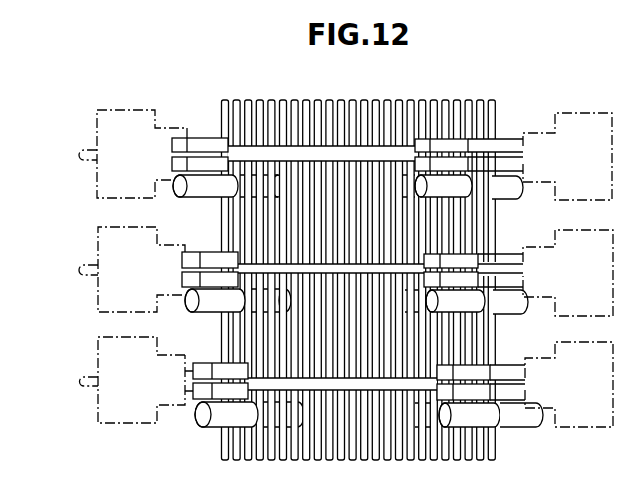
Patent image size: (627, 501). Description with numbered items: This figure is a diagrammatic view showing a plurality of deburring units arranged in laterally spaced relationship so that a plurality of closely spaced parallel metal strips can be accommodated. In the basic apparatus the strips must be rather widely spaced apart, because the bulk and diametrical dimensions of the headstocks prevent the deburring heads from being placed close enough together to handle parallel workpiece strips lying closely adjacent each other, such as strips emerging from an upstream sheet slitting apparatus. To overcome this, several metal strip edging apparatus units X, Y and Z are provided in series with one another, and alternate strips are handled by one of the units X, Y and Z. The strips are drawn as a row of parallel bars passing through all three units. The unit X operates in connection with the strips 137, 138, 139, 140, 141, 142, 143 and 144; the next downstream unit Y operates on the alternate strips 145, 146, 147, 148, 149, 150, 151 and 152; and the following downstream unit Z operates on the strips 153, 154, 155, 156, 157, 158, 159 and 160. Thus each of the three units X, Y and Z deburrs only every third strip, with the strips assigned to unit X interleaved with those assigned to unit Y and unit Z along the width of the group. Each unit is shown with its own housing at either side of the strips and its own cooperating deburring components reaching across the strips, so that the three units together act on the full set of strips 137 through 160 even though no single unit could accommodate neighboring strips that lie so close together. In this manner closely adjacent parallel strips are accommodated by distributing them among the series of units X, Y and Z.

The strip 137 is at (237, 461).
The strip 138 is at (283, 461).
The strip 139 is at (318, 461).
The strip 140 is at (353, 461).
The strip 141 is at (387, 461).
The strip 142 is at (422, 461).
The strip 143 is at (457, 461).
The strip 144 is at (492, 461).
The strip 145 is at (224, 462).
The strip 146 is at (271, 462).
The strip 147 is at (306, 462).
The strip 148 is at (341, 462).
The strip 149 is at (376, 462).
The strip 150 is at (410, 462).
The strip 151 is at (445, 462).
The strip 152 is at (480, 462).
The strip 153 is at (216, 286).
The strip 154 is at (260, 101).
The strip 155 is at (295, 101).
The strip 156 is at (329, 101).
The strip 157 is at (364, 101).
The strip 158 is at (399, 101).
The strip 159 is at (434, 101).
The strip 160 is at (469, 101).
The metal strip edging apparatus unit X is at (203, 427).
The metal strip edging apparatus unit Y is at (203, 312).
The metal strip edging apparatus unit Z is at (189, 202).